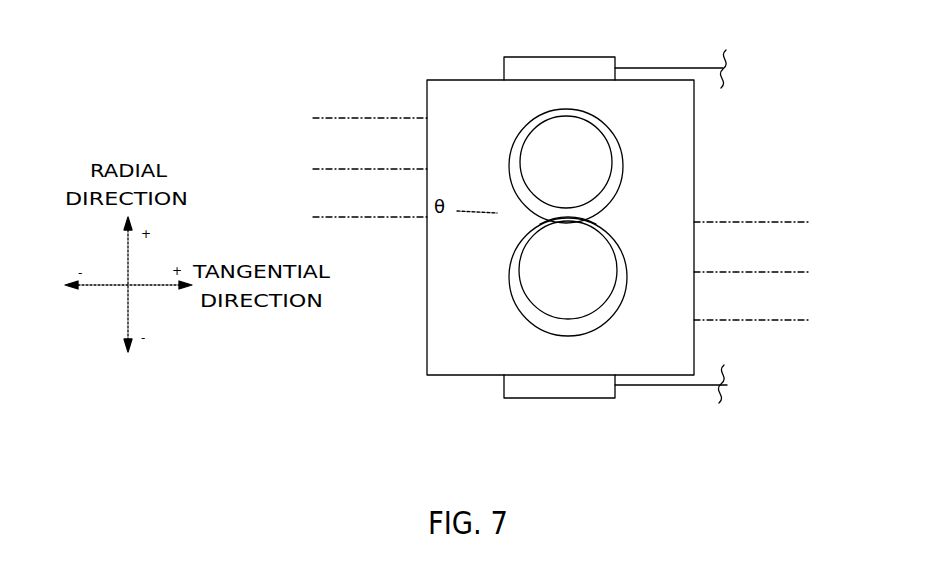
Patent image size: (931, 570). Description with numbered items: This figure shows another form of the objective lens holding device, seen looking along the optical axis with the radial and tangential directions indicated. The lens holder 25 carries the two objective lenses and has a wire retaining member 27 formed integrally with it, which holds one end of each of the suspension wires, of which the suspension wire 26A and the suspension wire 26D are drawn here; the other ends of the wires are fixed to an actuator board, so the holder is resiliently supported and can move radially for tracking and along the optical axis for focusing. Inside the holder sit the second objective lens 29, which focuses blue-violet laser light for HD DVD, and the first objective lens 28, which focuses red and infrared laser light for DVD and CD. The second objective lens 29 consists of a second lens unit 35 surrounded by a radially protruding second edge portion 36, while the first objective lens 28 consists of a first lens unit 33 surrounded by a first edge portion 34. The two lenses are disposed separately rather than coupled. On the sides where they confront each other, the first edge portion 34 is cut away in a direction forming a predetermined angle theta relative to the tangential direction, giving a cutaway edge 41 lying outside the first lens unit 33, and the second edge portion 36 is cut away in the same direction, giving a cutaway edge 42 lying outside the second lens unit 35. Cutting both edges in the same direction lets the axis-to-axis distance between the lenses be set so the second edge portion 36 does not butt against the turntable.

The lens holder 25 is at (455, 362).
The wire retaining member 27 is at (552, 57).
The suspension wire 26A is at (665, 68).
The suspension wire 26D is at (668, 385).
The second objective lens 29 is at (594, 164).
The second lens unit 35 is at (592, 133).
The second edge portion 36 is at (623, 160).
The first objective lens 28 is at (599, 285).
The first lens unit 33 is at (592, 284).
The first edge portion 34 is at (607, 318).
The cutaway edge 42 is at (610, 231).
The cutaway edge 41 is at (532, 212).